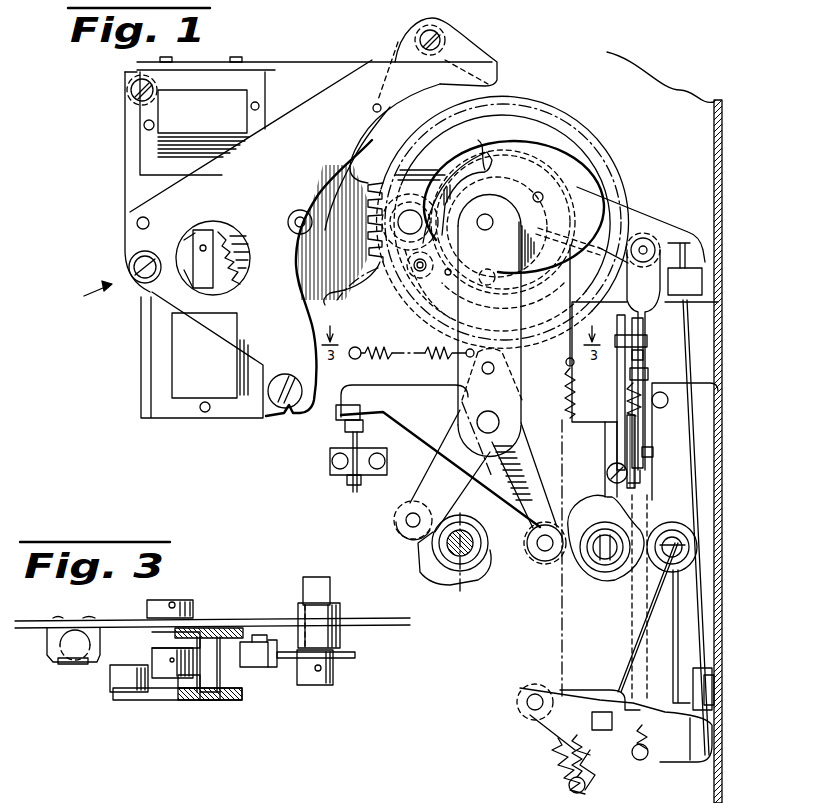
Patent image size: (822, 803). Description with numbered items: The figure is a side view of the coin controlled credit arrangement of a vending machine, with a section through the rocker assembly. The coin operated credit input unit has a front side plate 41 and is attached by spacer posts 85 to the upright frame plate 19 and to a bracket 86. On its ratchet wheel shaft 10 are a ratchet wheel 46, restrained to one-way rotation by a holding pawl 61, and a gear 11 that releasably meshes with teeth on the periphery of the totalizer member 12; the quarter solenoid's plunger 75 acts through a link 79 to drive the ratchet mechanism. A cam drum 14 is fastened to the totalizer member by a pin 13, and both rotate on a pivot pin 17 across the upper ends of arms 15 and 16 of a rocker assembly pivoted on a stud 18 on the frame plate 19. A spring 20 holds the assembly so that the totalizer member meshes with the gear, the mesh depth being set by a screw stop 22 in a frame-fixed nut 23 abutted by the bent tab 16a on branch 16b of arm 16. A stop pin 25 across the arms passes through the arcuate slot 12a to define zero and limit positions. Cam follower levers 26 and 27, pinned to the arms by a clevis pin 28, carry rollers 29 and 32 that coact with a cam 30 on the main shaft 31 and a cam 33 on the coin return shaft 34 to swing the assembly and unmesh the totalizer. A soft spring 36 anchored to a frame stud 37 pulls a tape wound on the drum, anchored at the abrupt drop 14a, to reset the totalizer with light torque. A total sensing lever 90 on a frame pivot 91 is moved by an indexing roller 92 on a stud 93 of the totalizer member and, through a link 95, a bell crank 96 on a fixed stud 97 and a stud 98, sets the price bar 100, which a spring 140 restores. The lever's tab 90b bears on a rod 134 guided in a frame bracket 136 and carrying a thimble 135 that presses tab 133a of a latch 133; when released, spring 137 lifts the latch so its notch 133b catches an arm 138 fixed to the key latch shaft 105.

In FIG. 1, the ratchet wheel shaft 10 is at (297, 210).
In FIG. 1, the gear 11 is at (355, 190).
In FIG. 1, the totalizer member 12 is at (430, 133).
In FIG. 1, the arcuate slot 12a is at (446, 276).
In FIG. 1, the pin 13 is at (544, 197).
In FIG. 1, the cam drum 14 is at (530, 153).
In FIG. 1, the abrupt drop 14a is at (443, 181).
In FIG. 1, the arm 15 is at (523, 338).
In FIG. 3, the arm 15 is at (233, 700).
In FIG. 3, the arm 16 is at (228, 632).
In FIG. 1, the laterally bent tab 16a is at (347, 404).
In FIG. 3, the laterally bent tab 16a is at (88, 662).
In FIG. 1, the branch 16b is at (412, 395).
In FIG. 3, the branch 16b is at (113, 632).
In FIG. 1, the pivot pin 17 is at (490, 215).
In FIG. 1, the stud 18 is at (500, 419).
In FIG. 3, the stud 18 is at (205, 618).
In FIG. 1, the upright frame plate 19 is at (660, 75).
In FIG. 1, the spring 20 is at (373, 351).
In FIG. 1, the screw stop 22 is at (344, 428).
In FIG. 1, the frame-fixed nut 23 is at (330, 462).
In FIG. 3, the frame-fixed nut 23 is at (48, 643).
In FIG. 1, the stop pin 25 is at (497, 280).
In FIG. 1, the cam follower lever 26 is at (430, 458).
In FIG. 3, the cam follower lever 26 is at (158, 700).
In FIG. 1, the cam follower lever 27 is at (538, 478).
In FIG. 3, the cam follower lever 27 is at (250, 640).
In FIG. 1, the clevis pin 28 is at (496, 368).
In FIG. 3, the clevis pin 28 is at (203, 677).
In FIG. 1, the roller 29 is at (394, 520).
In FIG. 3, the roller 29 is at (115, 678).
In FIG. 1, the cam 30 is at (420, 562).
In FIG. 3, the cam 30 is at (160, 675).
In FIG. 1, the main shaft 31 is at (470, 558).
In FIG. 3, the main shaft 31 is at (167, 643).
In FIG. 1, the roller 32 is at (548, 562).
In FIG. 3, the roller 32 is at (253, 668).
In FIG. 1, the cam 33 is at (600, 498).
In FIG. 3, the cam 33 is at (347, 660).
In FIG. 1, the coin return shaft 34 is at (605, 560).
In FIG. 3, the coin return shaft 34 is at (328, 590).
In FIG. 1, the spring 36 is at (562, 632).
In FIG. 1, the frame stud 37 is at (568, 782).
In FIG. 1, the front side plate 41 is at (145, 203).
In FIG. 1, the ratchet wheel 46 is at (352, 290).
In FIG. 1, the holding pawl 61 is at (232, 290).
In FIG. 1, the plunger 75 is at (205, 280).
In FIG. 1, the link 79 is at (143, 296).
In FIG. 1, the spacer posts 85 is at (127, 97).
In FIG. 1, the bracket 86 is at (465, 58).
In FIG. 1, the total sensing lever 90 is at (620, 205).
In FIG. 1, the tab 90b is at (716, 259).
In FIG. 1, the frame-based pivot 91 is at (416, 190).
In FIG. 1, the total indexing roller 92 is at (410, 268).
In FIG. 1, the stud 93 is at (417, 272).
In FIG. 1, the link 95 is at (635, 280).
In FIG. 1, the bell crank 96 is at (637, 435).
In FIG. 1, the fixed stud 97 is at (645, 342).
In FIG. 1, the stud 98 is at (653, 452).
In FIG. 1, the price bar 100 is at (640, 480).
In FIG. 1, the key latch shaft 105 is at (682, 545).
In FIG. 1, the latch 133 is at (535, 722).
In FIG. 1, the tab 133a is at (712, 728).
In FIG. 1, the notch 133b is at (608, 730).
In FIG. 1, the rod 134 is at (690, 322).
In FIG. 1, the thimble 135 is at (705, 680).
In FIG. 1, the frame bracket 136 is at (702, 290).
In FIG. 1, the spring 137 is at (600, 760).
In FIG. 1, the arm 138 is at (670, 640).
In FIG. 1, the spring 140 is at (645, 760).